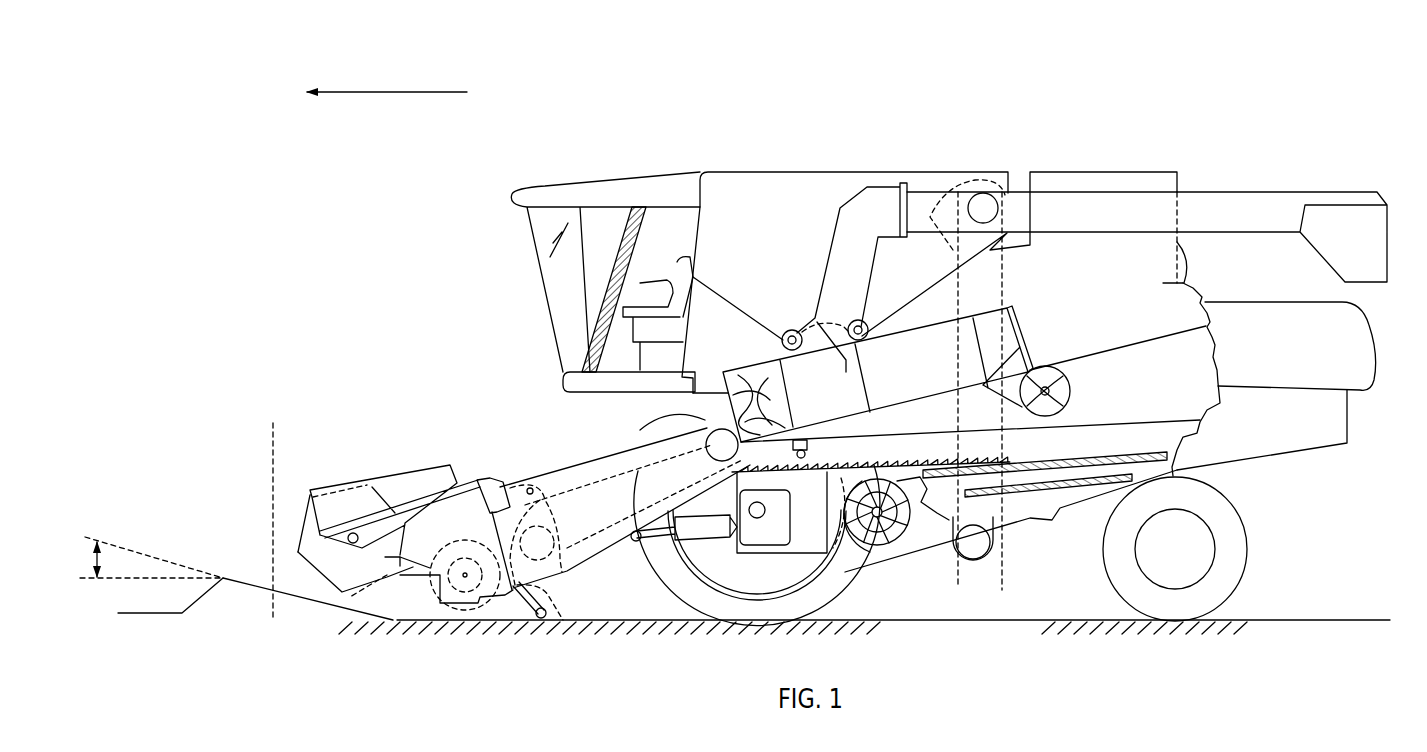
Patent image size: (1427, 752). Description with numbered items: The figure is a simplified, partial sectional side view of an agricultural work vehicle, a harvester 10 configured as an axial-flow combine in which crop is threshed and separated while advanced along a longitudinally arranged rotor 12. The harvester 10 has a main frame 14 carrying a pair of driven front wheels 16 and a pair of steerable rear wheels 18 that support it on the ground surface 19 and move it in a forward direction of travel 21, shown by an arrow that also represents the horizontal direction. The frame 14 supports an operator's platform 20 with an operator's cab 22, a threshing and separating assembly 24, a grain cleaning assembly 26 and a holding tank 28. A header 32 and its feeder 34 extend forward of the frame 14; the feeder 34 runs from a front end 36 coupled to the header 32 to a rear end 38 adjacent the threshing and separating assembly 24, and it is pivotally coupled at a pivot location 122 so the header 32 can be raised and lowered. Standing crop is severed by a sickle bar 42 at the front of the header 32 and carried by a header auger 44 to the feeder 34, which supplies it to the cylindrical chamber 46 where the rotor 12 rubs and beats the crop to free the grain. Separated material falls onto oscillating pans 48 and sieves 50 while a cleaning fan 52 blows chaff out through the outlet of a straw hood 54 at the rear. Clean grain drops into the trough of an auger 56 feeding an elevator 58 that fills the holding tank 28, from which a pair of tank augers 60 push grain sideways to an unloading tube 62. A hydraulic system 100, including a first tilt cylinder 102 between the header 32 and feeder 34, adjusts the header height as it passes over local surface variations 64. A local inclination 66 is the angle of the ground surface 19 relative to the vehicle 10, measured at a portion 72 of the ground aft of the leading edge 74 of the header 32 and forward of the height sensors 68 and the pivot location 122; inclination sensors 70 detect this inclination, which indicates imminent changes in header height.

The harvester 10 is at (570, 140).
The rotor 12 is at (755, 385).
The main frame 14 is at (1182, 473).
The front wheels 16 is at (700, 590).
The rear wheels 18 is at (1242, 563).
The ground surface 19 is at (1298, 615).
The operator's platform 20 is at (567, 384).
The direction of travel 21 is at (406, 91).
The operator's cab 22 is at (556, 285).
The threshing and separating assembly 24 is at (964, 374).
The grain cleaning assembly 26 is at (935, 560).
The holding tank 28 is at (790, 172).
The header 32 is at (352, 474).
The feeder 34 is at (547, 463).
The front end 36 is at (475, 522).
The rear end 38 is at (712, 431).
The sickle bar 42 is at (350, 602).
The header auger 44 is at (494, 624).
The cylindrical chamber 46 is at (918, 332).
The pans 48 is at (898, 451).
The sieves 50 is at (1003, 465).
The cleaning fan 52 is at (872, 548).
The straw hood 54 is at (1364, 360).
The auger 56 is at (975, 545).
The elevator 58 is at (1002, 268).
The tank augers 60 is at (791, 329).
The unloading tube 62 is at (1233, 207).
The local surface variations 64 is at (222, 574).
The local inclination 66 is at (94, 560).
The height sensors 68 is at (535, 618).
The inclination sensors 70 is at (393, 582).
The portion of the ground surface 72 is at (292, 589).
The leading edge 74 is at (269, 463).
The hydraulic system 100 is at (569, 574).
The first tilt cylinder 102 is at (562, 612).
The pivot location 122 is at (706, 457).